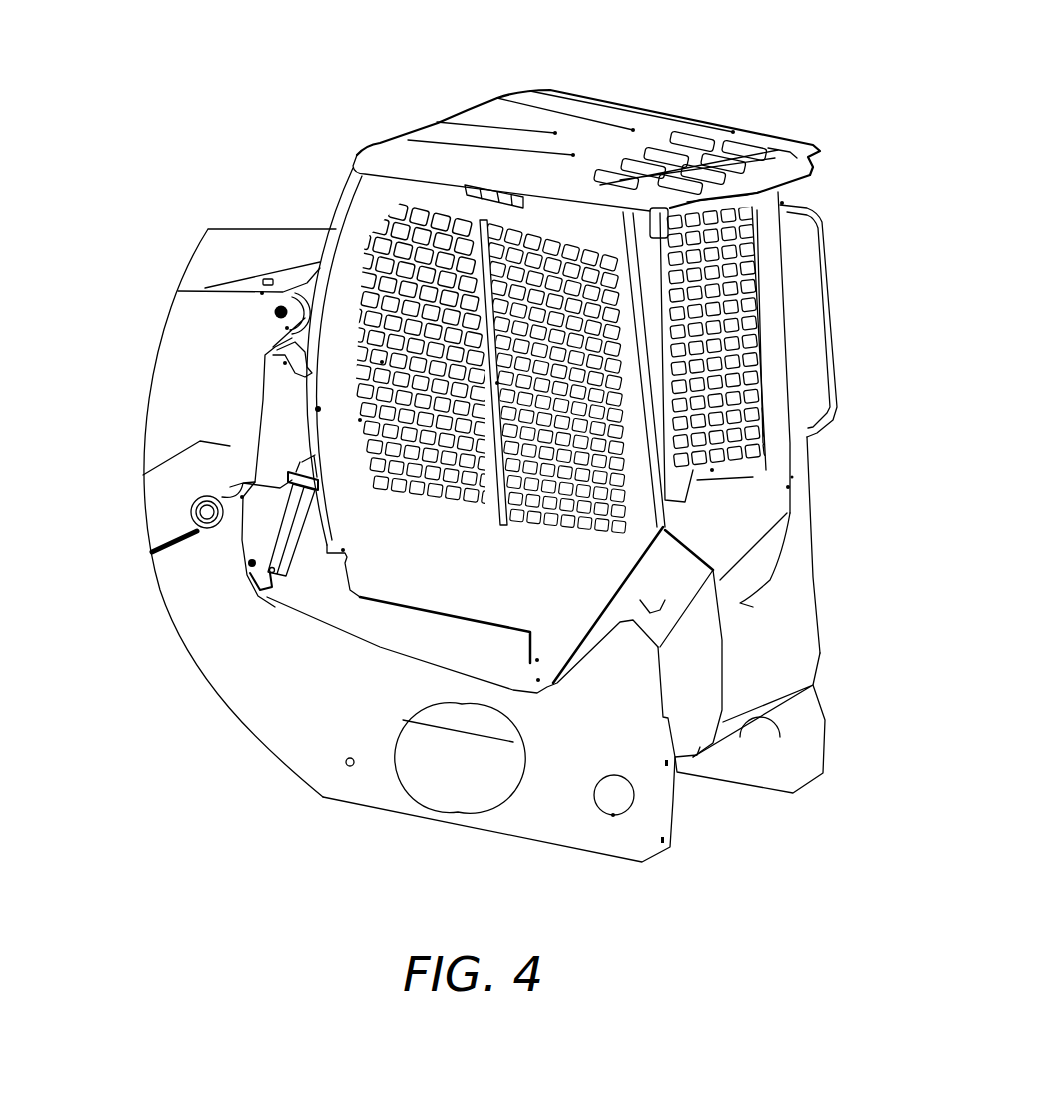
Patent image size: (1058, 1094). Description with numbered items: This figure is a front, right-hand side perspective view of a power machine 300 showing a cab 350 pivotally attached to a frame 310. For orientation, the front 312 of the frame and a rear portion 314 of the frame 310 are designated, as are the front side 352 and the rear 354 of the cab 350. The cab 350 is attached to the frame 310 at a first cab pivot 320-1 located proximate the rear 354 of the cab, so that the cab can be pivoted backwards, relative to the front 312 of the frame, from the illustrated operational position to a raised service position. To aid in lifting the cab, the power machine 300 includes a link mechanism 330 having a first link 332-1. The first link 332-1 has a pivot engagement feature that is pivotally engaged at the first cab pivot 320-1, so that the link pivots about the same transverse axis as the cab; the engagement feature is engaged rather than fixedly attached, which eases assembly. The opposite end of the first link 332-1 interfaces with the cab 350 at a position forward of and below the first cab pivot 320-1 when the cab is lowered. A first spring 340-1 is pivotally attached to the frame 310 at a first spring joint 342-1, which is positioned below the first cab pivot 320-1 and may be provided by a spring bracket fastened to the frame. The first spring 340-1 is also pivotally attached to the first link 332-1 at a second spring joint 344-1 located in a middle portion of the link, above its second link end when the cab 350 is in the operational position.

The power machine 300 is at (604, 433).
The frame 310 is at (208, 317).
The front of the frame 312 is at (842, 662).
The rear portion of frame 314 is at (125, 298).
The first cab pivot 320-1 is at (268, 278).
The link mechanism 330 is at (278, 402).
The first link 332-1 is at (287, 373).
The first spring 340-1 is at (283, 533).
The first spring joint 342-1 is at (258, 593).
The second spring joint 344-1 is at (300, 413).
The cab 350 is at (578, 95).
The front side of cab 352 is at (820, 198).
The rear of the cab 354 is at (348, 113).